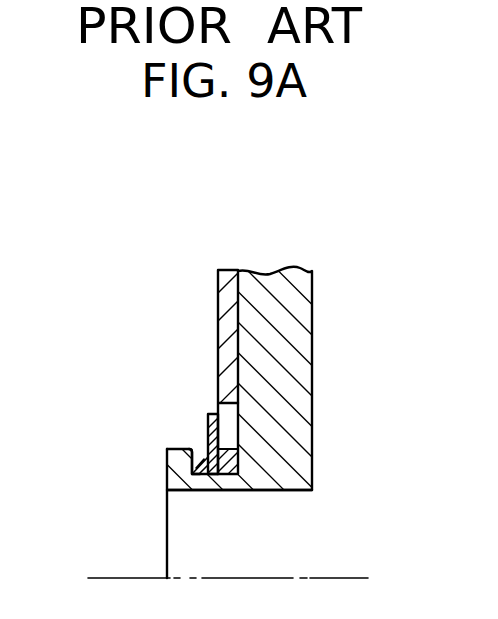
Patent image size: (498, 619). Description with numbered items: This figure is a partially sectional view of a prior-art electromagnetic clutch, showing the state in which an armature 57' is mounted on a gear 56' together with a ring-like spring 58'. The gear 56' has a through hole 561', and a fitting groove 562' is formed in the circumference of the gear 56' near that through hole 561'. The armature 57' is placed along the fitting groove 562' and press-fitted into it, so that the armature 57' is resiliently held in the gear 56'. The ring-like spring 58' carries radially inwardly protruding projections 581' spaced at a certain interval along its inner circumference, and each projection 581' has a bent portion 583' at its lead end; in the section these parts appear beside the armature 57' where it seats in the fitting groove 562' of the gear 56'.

The gear 56' is at (289, 386).
The armature 57' is at (179, 369).
The ring-like spring 58' is at (169, 415).
The through hole 561' is at (248, 513).
The fitting groove 562' is at (124, 445).
The projection 581' is at (259, 495).
The bent portion 583' is at (207, 512).